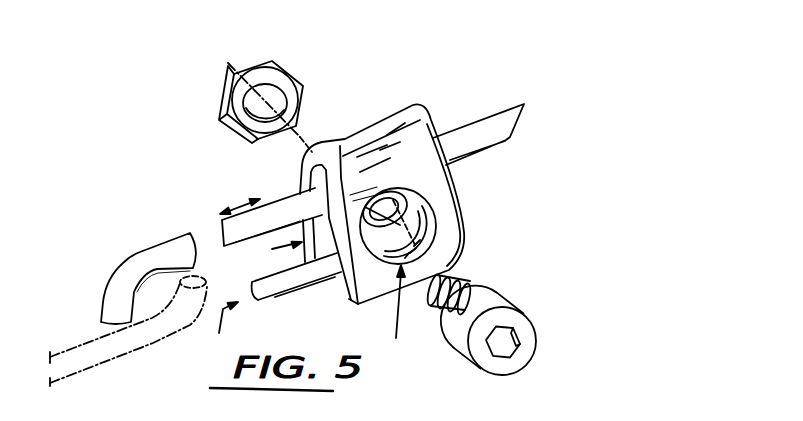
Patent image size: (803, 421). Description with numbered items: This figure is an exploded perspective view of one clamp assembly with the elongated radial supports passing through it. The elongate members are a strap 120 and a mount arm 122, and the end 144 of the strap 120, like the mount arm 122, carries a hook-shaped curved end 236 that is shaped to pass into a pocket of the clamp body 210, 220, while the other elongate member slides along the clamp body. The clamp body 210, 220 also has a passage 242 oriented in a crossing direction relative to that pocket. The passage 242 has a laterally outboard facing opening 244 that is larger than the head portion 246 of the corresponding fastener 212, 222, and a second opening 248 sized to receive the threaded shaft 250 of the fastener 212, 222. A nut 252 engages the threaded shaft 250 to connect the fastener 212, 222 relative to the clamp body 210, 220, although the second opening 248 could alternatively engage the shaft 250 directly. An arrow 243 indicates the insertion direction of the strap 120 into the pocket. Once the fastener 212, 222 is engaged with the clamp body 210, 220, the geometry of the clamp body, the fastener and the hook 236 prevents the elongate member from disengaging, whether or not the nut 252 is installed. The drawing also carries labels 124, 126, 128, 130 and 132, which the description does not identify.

The strap 120 is at (293, 285).
The mount arm 122 is at (497, 118).
The tube 124 is at (170, 357).
The clamp assembly 126 is at (403, 106).
The clamp assembly 128 is at (382, 214).
The clamp assembly 130 is at (397, 205).
The clamp assembly 132 is at (385, 204).
The end of strap 144 is at (130, 243).
The clamp body 210 is at (447, 176).
The clamp body 220 is at (447, 176).
The fastener 212 is at (528, 327).
The fastener 222 is at (519, 324).
The curved end 236 is at (425, 212).
The passage 242 is at (398, 316).
The arrow 243 is at (221, 331).
The laterally outboard facing opening 244 is at (440, 238).
The head portion 246 is at (548, 361).
The second opening 248 is at (391, 210).
The threaded shaft 250 is at (473, 279).
The nut 252 is at (272, 62).